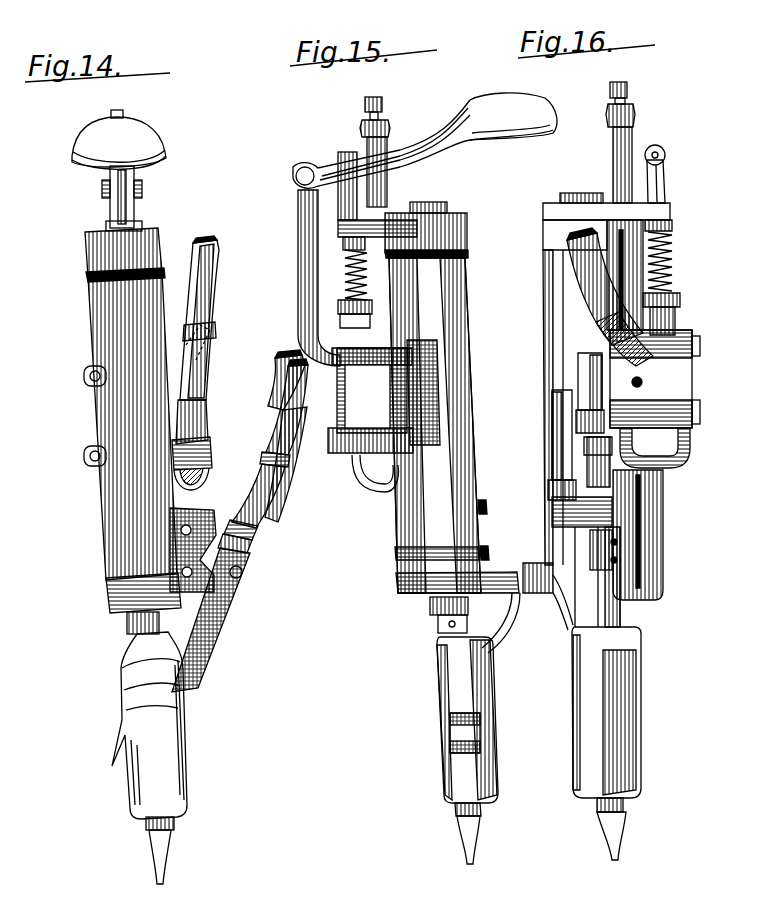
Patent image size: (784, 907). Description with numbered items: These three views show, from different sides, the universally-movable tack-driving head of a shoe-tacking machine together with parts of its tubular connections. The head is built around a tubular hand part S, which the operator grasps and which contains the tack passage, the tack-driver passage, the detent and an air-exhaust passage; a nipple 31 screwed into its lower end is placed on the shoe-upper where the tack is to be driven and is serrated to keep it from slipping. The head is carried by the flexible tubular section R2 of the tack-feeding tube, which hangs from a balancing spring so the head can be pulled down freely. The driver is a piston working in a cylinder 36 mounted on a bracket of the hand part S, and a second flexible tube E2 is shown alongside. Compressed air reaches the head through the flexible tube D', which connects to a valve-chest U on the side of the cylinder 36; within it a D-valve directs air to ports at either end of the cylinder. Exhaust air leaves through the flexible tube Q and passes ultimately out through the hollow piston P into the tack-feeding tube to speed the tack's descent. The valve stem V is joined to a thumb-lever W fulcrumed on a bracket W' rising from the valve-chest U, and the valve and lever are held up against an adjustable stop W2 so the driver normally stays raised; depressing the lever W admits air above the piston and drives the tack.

In FIG. 14, the lever W is at (119, 170).
In FIG. 15, the lever W is at (425, 140).
In FIG. 15, the bracket W' is at (307, 278).
In FIG. 15, the adjustable stop W2 is at (367, 150).
In FIG. 16, the adjustable stop W2 is at (610, 141).
In FIG. 15, the valve stem V is at (373, 240).
In FIG. 16, the valve stem V is at (661, 240).
In FIG. 14, the flexible tube Q is at (203, 318).
In FIG. 16, the flexible tube Q is at (610, 297).
In FIG. 15, the valve-chest U is at (384, 396).
In FIG. 16, the valve-chest U is at (655, 379).
In FIG. 14, the flexible tube D' is at (197, 445).
In FIG. 15, the flexible tube D' is at (371, 479).
In FIG. 16, the flexible tube D' is at (672, 448).
In FIG. 14, the flexible tube E2 is at (260, 508).
In FIG. 15, the flexible tube E2 is at (286, 436).
In FIG. 16, the flexible tube E2 is at (553, 445).
In FIG. 14, the flexible tubular section R2 is at (285, 374).
In FIG. 16, the flexible tubular section R2 is at (586, 462).
In FIG. 16, the hollow piston P is at (590, 393).
In FIG. 14, the tubular hand part S is at (149, 725).
In FIG. 15, the tubular hand part S is at (475, 698).
In FIG. 16, the tubular hand part S is at (606, 712).
In FIG. 14, the nipple 31 is at (169, 850).
In FIG. 15, the nipple 31 is at (476, 833).
In FIG. 16, the nipple 31 is at (620, 829).
In FIG. 14, the cylinder 36 is at (132, 431).
In FIG. 15, the cylinder 36 is at (452, 397).
In FIG. 16, the cylinder 36 is at (601, 396).